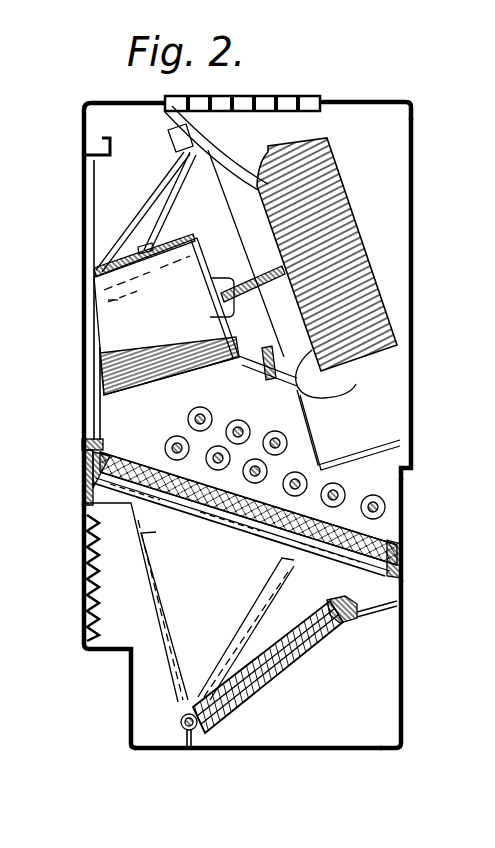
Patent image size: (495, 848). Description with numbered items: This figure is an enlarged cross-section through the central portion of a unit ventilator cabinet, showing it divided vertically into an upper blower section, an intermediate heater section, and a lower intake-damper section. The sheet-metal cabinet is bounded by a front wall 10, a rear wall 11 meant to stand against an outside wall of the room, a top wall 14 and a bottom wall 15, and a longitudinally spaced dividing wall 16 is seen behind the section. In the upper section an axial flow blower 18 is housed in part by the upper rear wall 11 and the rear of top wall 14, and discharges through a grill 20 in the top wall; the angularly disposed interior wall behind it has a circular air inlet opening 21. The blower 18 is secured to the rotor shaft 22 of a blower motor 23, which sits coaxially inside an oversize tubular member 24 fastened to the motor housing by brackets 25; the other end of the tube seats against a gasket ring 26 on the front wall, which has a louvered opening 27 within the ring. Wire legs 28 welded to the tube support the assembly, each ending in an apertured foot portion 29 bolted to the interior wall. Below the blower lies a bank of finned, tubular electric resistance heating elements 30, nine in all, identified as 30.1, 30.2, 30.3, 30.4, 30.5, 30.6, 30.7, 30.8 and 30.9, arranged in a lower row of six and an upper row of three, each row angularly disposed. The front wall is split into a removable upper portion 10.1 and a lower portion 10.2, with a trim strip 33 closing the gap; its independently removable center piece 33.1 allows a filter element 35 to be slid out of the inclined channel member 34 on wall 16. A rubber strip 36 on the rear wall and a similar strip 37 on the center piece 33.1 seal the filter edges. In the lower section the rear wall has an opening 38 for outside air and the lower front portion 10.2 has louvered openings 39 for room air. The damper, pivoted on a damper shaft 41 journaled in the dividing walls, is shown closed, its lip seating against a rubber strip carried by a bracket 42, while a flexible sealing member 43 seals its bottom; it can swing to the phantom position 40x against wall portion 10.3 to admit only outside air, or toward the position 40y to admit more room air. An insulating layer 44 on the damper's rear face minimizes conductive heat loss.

The front wall 10 is at (80, 170).
The upper portion of front wall 10.1 is at (82, 202).
The lower portion of front wall 10.2 is at (95, 510).
The portion of lower cabinet wall 10.3 is at (95, 536).
The rear wall 11 is at (413, 232).
The top wall 14 is at (376, 99).
The bottom wall 15 is at (287, 752).
The dividing wall 16 is at (384, 132).
The axial flow blower 18 is at (354, 196).
The grill 20 is at (268, 93).
The air inlet opening 21 is at (240, 224).
The rotor shaft 22 is at (189, 316).
The blower motor 23 is at (116, 299).
The tubular member 24 is at (123, 396).
The bracket 25 is at (184, 234).
The gasket ring 26 is at (98, 392).
The louvered opening 27 is at (90, 366).
The wire leg 28 is at (150, 243).
The foot portion 29 is at (194, 142).
The electric resistance heating elements 30 is at (388, 492).
The electric heating element 30.1 is at (386, 507).
The electric heating element 30.2 is at (342, 488).
The electric heating element 30.3 is at (298, 494).
The electric heating element 30.4 is at (248, 478).
The electric heating element 30.5 is at (206, 460).
The electric heating element 30.6 is at (170, 440).
The electric heating element 30.7 is at (208, 402).
The electric heating element 30.8 is at (241, 420).
The electric heating element 30.9 is at (289, 442).
The trim strip 33 is at (248, 508).
The center piece of trim strip 33.1 is at (90, 490).
The channel member 34 is at (233, 532).
The filter element 35 is at (190, 513).
The rubber strip 36 is at (396, 564).
The rubber strip 37 is at (83, 454).
The rear wall opening 38 is at (403, 636).
The louvered openings 39 is at (84, 594).
The damper position 40x is at (150, 590).
The damper position 40y is at (262, 594).
The damper shaft 41 is at (180, 723).
The bracket 42 is at (358, 618).
The flexible sealing member 43 is at (189, 748).
The insulating material 44 is at (290, 650).